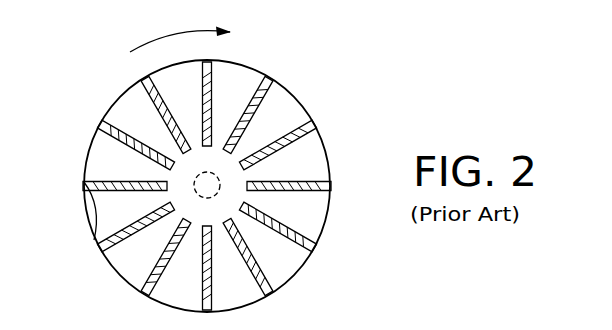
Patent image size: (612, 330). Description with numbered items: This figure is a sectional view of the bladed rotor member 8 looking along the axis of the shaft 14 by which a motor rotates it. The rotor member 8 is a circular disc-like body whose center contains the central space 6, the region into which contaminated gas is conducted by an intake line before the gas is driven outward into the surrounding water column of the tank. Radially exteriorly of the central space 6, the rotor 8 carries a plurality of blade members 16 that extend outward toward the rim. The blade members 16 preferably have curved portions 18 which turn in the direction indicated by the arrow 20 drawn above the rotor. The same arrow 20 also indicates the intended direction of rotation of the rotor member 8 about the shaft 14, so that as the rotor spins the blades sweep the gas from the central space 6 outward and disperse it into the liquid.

The central space 6 is at (185, 193).
The bladed rotor member 8 is at (92, 148).
The shaft 14 is at (218, 172).
The blade members 16 is at (157, 126).
The curved portions 18 is at (92, 236).
The arrow 20 is at (192, 32).